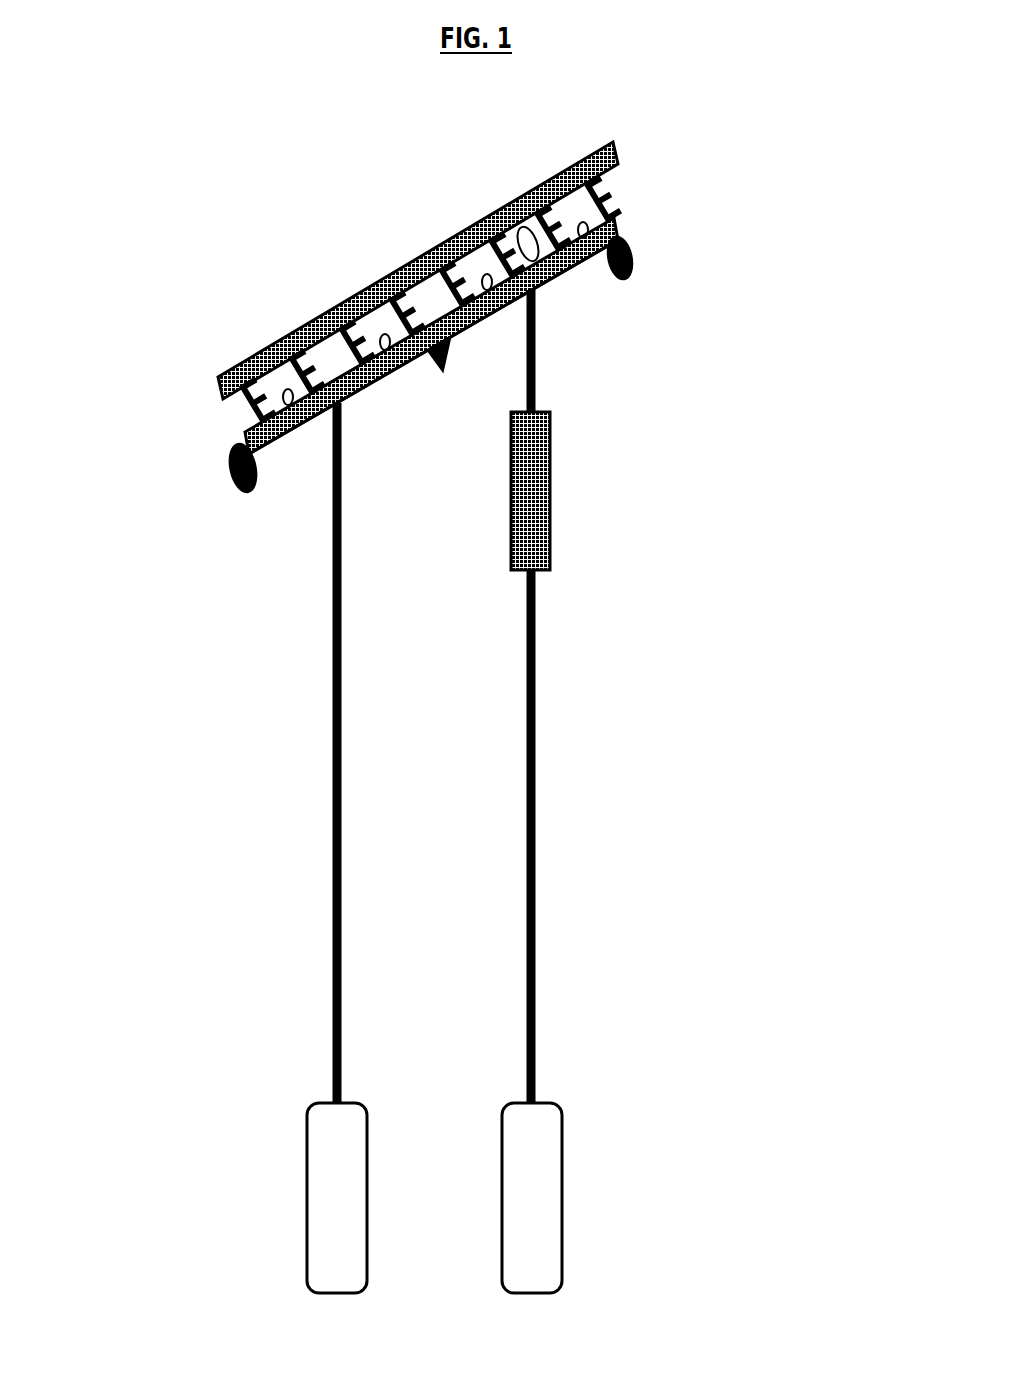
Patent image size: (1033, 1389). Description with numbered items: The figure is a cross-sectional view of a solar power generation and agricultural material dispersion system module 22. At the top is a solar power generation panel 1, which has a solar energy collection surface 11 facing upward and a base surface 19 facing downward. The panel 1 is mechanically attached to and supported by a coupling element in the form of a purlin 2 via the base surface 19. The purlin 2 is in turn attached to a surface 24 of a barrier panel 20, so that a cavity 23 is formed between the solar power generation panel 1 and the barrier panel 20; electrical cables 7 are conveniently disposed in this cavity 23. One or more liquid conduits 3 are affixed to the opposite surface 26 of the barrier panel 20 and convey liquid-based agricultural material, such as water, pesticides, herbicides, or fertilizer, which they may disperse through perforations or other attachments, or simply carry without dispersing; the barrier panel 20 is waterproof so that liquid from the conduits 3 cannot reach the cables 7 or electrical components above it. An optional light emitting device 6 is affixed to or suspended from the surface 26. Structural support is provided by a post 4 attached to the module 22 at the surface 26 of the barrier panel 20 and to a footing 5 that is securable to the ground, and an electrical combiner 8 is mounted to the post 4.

The solar power generation panel 1 is at (303, 326).
The purlin 2 is at (242, 410).
The liquid conduits 3 is at (227, 498).
The post 4 is at (321, 772).
The footing 5 is at (296, 1188).
The light emitting device 6 is at (443, 391).
The electrical cables 7 is at (599, 215).
The electrical combiner 8 is at (566, 486).
The solar energy collection surface 11 is at (249, 343).
The base surface 19 is at (622, 178).
The barrier panel 20 is at (490, 318).
The solar power generation and agricultural material dispersion system module 22 is at (683, 1115).
The cavity 23 is at (591, 208).
The surface of barrier panel 24 is at (332, 360).
The surface of barrier panel 26 is at (276, 451).